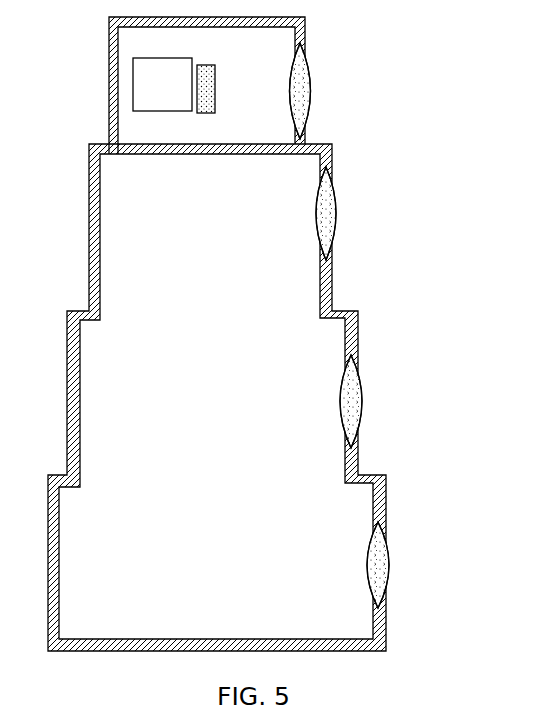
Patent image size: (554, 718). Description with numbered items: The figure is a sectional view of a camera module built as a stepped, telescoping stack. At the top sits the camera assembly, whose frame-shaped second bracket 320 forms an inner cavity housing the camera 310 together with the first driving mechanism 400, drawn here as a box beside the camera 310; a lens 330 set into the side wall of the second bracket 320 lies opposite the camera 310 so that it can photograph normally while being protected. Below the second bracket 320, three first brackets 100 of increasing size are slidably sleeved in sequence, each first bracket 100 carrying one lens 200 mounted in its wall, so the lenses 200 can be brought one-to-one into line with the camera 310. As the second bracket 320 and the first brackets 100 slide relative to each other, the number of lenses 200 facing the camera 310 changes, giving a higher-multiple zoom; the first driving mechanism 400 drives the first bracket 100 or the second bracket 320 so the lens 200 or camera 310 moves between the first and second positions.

The first bracket 100 is at (327, 277).
The lens 200 is at (327, 207).
The camera 310 is at (199, 106).
The second bracket 320 is at (109, 23).
The lens 330 is at (302, 80).
The first driving mechanism 400 is at (144, 78).